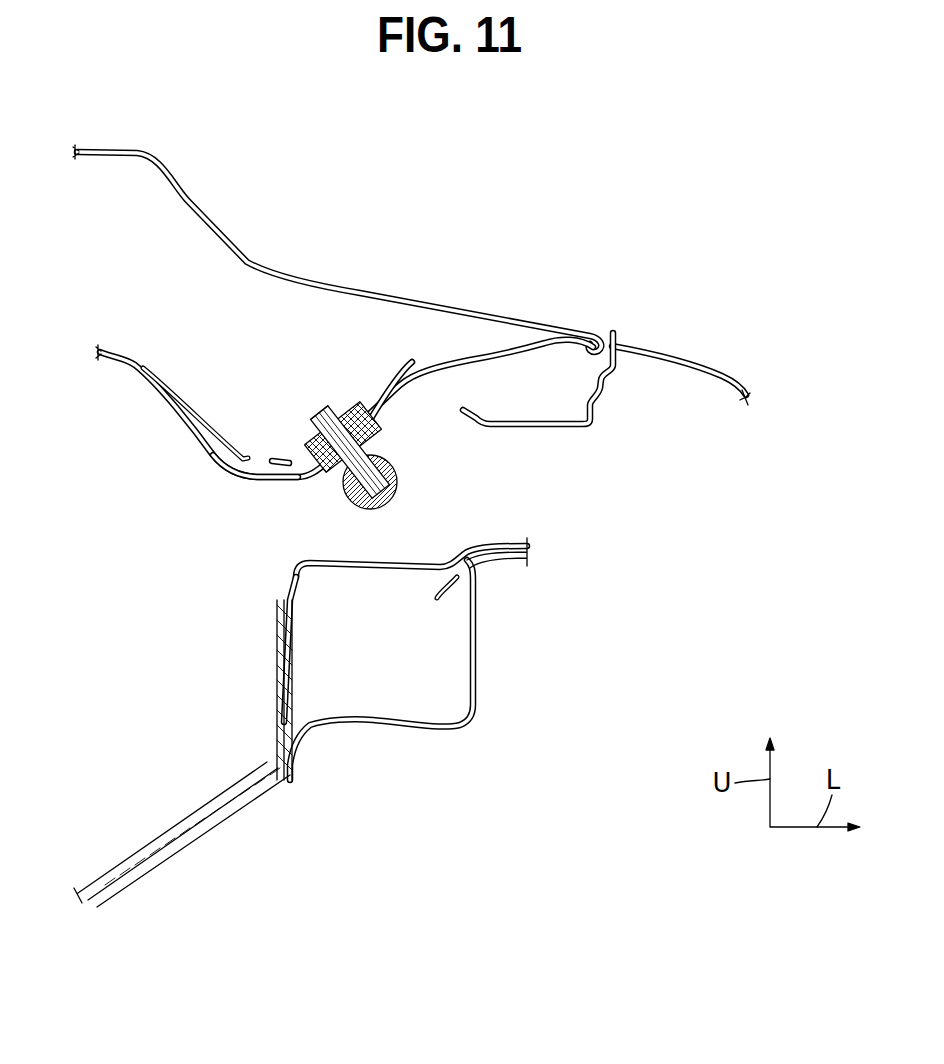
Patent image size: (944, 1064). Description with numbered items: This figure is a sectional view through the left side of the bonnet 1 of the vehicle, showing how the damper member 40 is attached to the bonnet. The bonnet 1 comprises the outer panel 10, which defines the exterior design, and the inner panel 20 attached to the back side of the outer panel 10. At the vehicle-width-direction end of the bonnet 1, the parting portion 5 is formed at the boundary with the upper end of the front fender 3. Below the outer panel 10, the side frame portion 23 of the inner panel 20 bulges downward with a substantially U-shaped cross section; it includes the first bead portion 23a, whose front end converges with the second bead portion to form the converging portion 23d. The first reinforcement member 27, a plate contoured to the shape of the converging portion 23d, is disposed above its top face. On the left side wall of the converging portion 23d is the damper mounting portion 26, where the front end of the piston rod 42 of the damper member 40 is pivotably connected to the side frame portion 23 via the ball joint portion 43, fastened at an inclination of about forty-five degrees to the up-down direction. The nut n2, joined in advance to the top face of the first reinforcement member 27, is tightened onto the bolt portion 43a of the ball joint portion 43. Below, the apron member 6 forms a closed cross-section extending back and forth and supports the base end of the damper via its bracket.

The bonnet 1 is at (256, 220).
The bonnet outer panel 10 is at (272, 268).
The front fender panel 3 is at (672, 358).
The parting portion 5 is at (613, 333).
The bonnet inner panel 20 is at (199, 442).
The side frame portion 23 is at (158, 425).
The first bead portion 23a is at (233, 516).
The converging portion 23d is at (223, 475).
The first reinforcement member 27 is at (177, 397).
The damper mounting portion 26 is at (317, 469).
The nut n2 is at (353, 408).
The damper member 40 is at (369, 455).
The piston rod 42 is at (396, 484).
The ball joint portion 43 is at (347, 428).
The bolt portion 43a is at (330, 412).
The apron member 6 is at (413, 560).